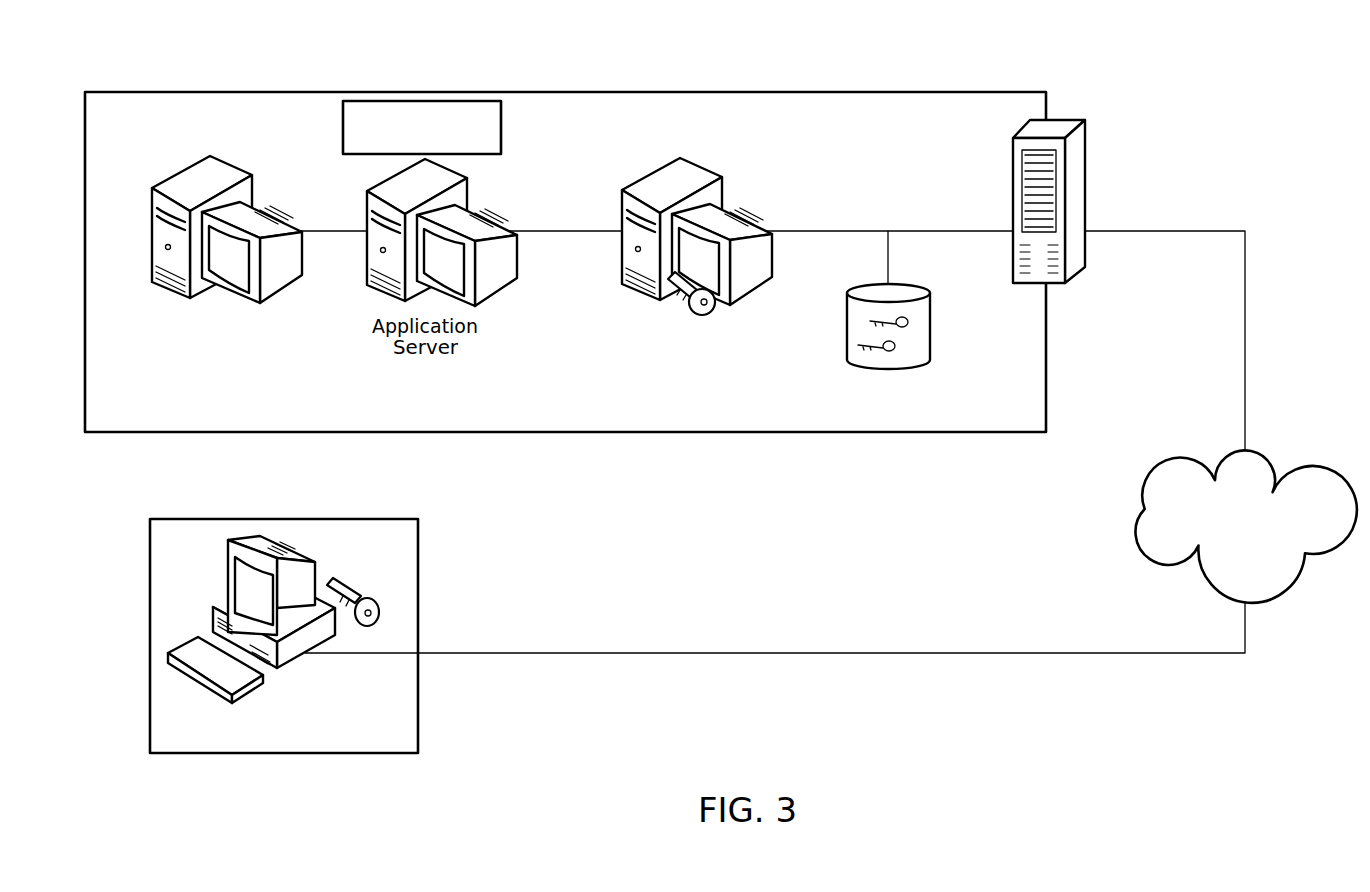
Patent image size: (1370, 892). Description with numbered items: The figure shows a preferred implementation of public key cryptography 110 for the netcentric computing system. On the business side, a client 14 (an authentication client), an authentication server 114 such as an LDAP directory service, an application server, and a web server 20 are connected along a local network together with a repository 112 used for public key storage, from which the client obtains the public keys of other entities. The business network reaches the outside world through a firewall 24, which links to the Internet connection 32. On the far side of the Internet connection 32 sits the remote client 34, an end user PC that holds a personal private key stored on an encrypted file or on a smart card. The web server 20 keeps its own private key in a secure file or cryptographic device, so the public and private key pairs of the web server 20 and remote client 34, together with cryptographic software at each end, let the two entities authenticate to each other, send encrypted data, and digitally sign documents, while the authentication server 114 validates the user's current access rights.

The public key cryptography implementation 110 is at (847, 71).
The client 14 is at (421, 93).
The authentication server 114 is at (207, 158).
The web server 20 is at (679, 160).
The repository 112 is at (912, 283).
The firewall 24 is at (1066, 118).
The Internet connection 32 is at (1294, 468).
The remote client 34 is at (418, 578).